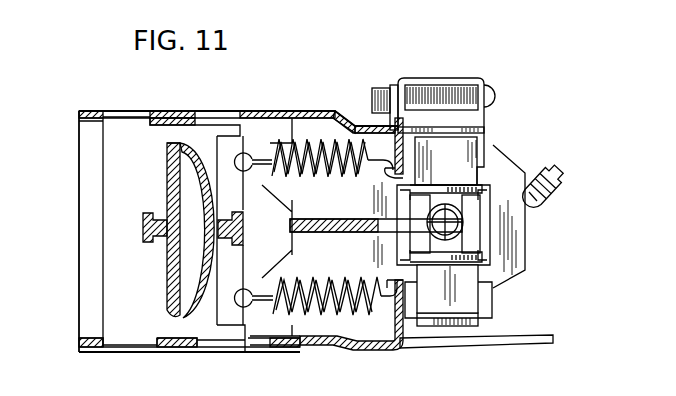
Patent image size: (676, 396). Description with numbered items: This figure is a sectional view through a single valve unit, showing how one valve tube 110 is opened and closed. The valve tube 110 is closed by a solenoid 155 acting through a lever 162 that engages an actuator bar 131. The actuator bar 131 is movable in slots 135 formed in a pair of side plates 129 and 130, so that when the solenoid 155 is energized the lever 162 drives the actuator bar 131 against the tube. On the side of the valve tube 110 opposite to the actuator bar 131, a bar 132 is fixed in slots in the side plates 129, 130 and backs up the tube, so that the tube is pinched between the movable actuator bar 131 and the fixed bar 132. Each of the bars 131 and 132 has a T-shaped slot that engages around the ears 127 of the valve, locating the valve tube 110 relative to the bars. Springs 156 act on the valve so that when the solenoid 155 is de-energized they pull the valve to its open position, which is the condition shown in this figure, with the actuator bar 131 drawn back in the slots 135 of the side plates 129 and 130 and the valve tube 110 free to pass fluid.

The valve tube 110 is at (170, 290).
The ears 127 is at (151, 214).
The side plate 129 is at (177, 120).
The side plate 130 is at (97, 352).
The actuator bar 131 is at (264, 219).
The bar 132 is at (103, 248).
The slots 135 is at (197, 126).
The solenoid 155 is at (492, 130).
The springs 156 is at (313, 134).
The lever 162 is at (350, 233).